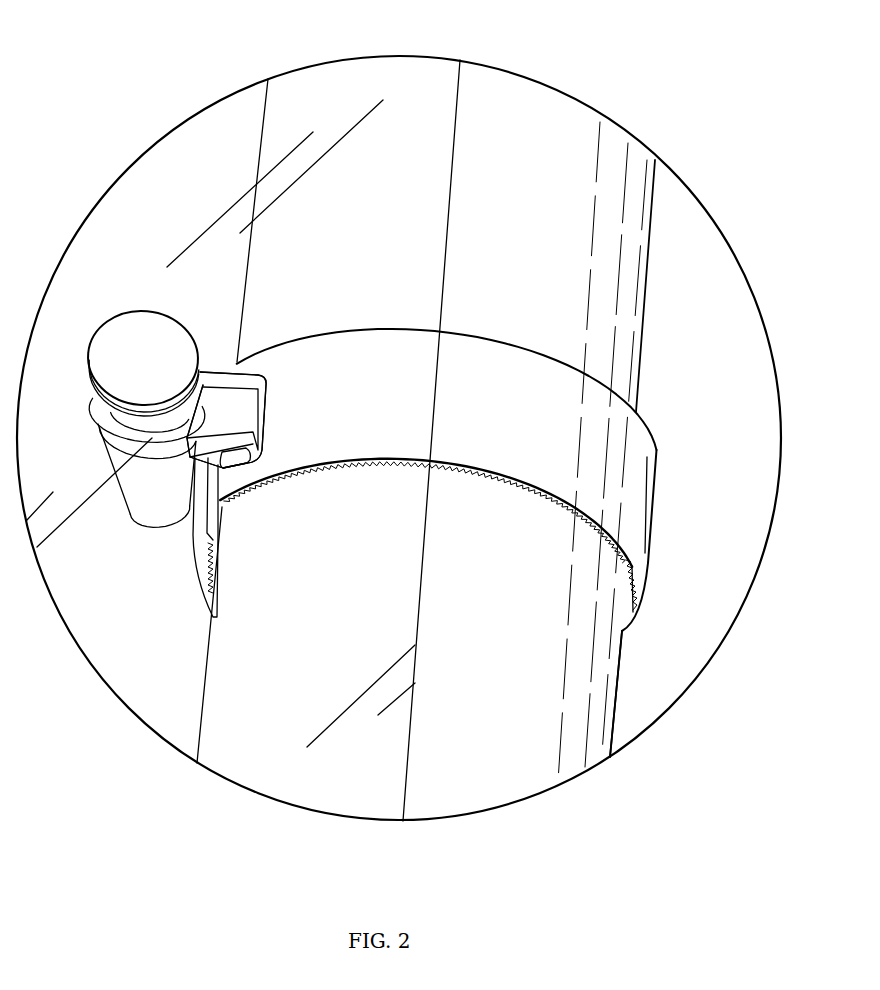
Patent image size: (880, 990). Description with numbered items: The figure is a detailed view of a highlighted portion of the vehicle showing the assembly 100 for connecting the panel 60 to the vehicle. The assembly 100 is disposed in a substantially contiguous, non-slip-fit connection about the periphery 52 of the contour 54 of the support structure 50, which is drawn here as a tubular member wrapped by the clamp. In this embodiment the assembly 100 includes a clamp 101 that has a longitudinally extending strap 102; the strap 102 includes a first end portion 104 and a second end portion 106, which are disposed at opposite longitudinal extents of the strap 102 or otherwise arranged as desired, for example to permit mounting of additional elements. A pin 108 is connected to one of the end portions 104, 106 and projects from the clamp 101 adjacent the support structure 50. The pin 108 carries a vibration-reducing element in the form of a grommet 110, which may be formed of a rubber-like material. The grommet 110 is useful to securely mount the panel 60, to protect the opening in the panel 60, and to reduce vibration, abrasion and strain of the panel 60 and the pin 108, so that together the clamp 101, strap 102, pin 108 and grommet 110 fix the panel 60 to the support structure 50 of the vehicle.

The support structure 50 is at (637, 312).
The periphery 52 is at (558, 114).
The contour 54 is at (630, 657).
The panel 60 is at (428, 79).
The assembly 100 is at (660, 497).
The clamp 101 is at (282, 413).
The strap 102 is at (648, 530).
The first end portion 104 is at (215, 362).
The second end portion 106 is at (172, 543).
The pin 108 is at (110, 332).
The grommet 110 is at (85, 408).